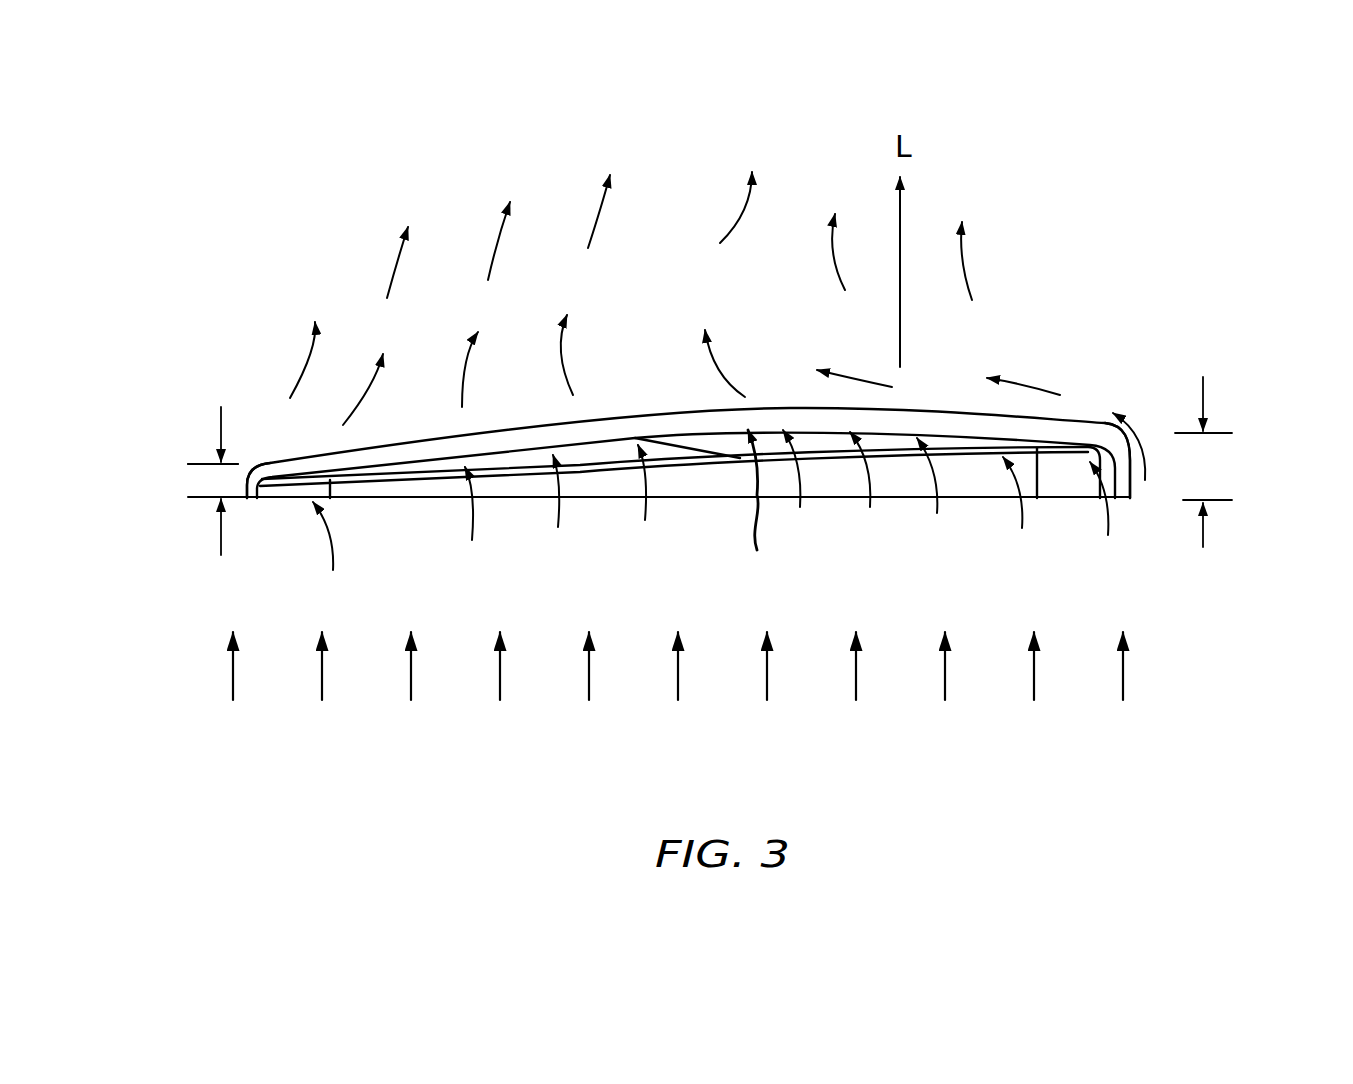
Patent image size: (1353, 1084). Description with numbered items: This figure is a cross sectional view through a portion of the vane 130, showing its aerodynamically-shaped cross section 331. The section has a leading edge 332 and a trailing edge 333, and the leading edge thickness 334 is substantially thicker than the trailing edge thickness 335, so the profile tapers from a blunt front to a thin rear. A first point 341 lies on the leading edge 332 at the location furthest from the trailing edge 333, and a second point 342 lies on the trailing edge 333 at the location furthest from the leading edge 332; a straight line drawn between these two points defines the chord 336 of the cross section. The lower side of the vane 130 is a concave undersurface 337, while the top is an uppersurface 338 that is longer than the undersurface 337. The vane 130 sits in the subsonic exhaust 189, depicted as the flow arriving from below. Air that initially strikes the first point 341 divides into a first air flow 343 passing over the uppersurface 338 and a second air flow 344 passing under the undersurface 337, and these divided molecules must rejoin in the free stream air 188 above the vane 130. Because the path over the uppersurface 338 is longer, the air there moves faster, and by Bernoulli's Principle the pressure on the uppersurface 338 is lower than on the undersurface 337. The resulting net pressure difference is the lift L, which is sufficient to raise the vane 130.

The vane 130 is at (1144, 361).
The aerodynamically-shaped cross section 331 is at (917, 410).
The leading edge 332 is at (1155, 469).
The trailing edge 333 is at (185, 484).
The leading edge thickness 334 is at (1207, 543).
The trailing edge thickness 335 is at (213, 463).
The chord 336 is at (817, 500).
The concave undersurface 337 is at (751, 507).
The uppersurface 338 is at (637, 422).
The first point 341 is at (1132, 498).
The second point 342 is at (242, 500).
The first air flow 343 is at (1042, 390).
The second air flow 344 is at (1098, 488).
The free stream air 188 is at (631, 276).
The exhaust 189 is at (678, 698).